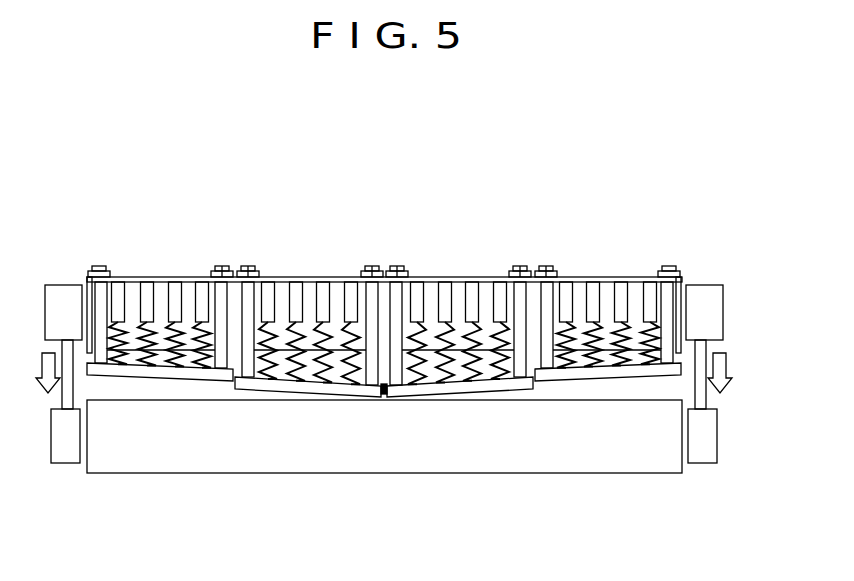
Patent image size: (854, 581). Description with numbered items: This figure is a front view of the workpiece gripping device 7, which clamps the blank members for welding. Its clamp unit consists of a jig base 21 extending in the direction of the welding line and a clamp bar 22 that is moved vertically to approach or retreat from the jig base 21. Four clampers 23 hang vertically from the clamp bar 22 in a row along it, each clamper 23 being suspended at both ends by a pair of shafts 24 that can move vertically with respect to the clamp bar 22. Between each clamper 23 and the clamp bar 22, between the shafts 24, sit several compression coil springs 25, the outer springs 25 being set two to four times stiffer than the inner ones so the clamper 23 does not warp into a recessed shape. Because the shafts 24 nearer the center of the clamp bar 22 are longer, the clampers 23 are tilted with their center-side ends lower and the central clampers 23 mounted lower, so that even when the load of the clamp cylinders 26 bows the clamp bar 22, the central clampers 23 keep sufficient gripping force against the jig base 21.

The workpiece gripping device 7 is at (618, 213).
The jig base 21 is at (233, 460).
The clamp bar 22 is at (165, 263).
The clamper 23 is at (159, 370).
The shaft 24 is at (86, 277).
The compression coil spring 25 is at (203, 386).
The clamp cylinder 26 is at (64, 460).